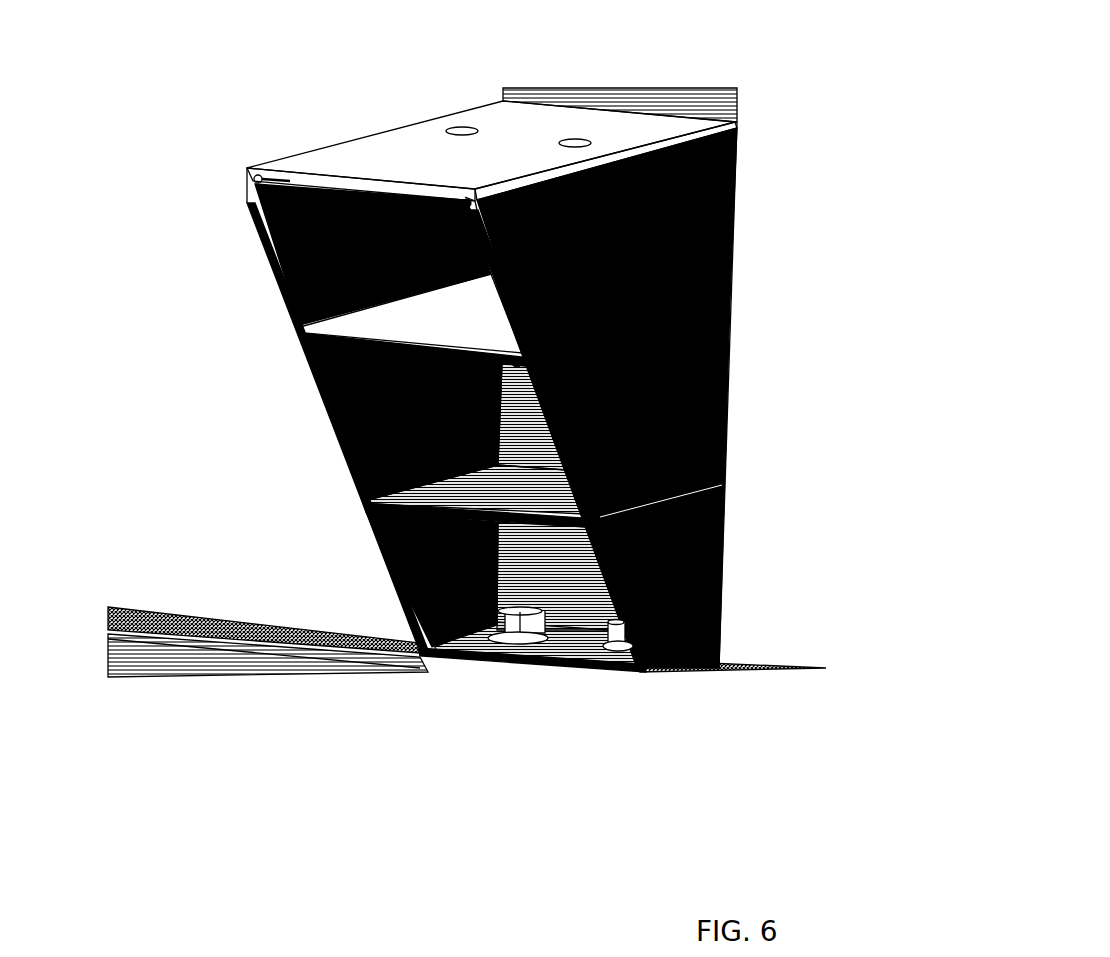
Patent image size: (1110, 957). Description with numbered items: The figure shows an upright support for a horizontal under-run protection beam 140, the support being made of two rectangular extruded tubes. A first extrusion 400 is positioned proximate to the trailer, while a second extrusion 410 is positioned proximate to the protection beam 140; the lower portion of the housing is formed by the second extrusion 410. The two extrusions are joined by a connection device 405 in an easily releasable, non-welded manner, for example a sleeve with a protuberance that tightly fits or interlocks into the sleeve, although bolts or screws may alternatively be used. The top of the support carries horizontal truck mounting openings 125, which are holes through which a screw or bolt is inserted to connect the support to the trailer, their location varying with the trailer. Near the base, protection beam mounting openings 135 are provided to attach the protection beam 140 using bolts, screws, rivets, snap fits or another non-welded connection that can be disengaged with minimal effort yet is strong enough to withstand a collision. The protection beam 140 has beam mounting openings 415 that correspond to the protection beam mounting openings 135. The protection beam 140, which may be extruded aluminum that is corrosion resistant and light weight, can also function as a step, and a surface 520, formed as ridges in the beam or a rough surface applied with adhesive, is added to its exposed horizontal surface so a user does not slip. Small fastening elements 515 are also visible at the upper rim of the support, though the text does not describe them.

The horizontal truck mounting openings 125 is at (455, 128).
The first extrusion 400 is at (705, 236).
The second extrusion 410 is at (732, 384).
The hook fasteners 515 is at (254, 184).
The connection device 405 is at (307, 345).
The protection beam mounting openings 135 is at (455, 657).
The beam mounting openings 415 is at (507, 662).
The protection beam 140 is at (152, 672).
The surface 520 is at (272, 642).